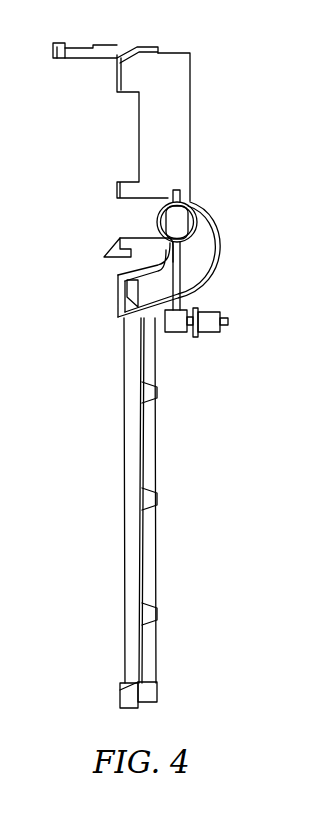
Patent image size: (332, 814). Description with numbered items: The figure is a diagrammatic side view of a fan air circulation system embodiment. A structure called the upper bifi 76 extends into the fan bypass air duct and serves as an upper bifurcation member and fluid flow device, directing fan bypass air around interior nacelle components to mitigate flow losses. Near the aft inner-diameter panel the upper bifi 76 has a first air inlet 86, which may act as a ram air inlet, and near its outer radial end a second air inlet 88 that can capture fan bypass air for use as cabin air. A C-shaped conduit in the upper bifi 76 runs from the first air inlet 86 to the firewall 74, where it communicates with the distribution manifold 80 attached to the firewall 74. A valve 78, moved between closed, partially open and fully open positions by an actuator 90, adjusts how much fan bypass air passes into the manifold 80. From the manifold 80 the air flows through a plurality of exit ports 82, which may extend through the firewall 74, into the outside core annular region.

The firewall 74 is at (152, 563).
The upper bifi 76 is at (173, 120).
The valve 78 is at (195, 206).
The distribution manifold 80 is at (130, 653).
The exit ports 82 is at (148, 487).
The first air inlet 86 is at (127, 217).
The second air inlet 88 is at (127, 137).
The actuator 90 is at (210, 330).